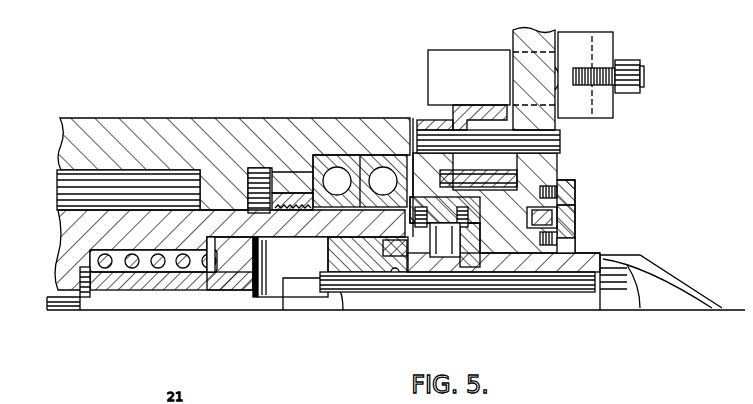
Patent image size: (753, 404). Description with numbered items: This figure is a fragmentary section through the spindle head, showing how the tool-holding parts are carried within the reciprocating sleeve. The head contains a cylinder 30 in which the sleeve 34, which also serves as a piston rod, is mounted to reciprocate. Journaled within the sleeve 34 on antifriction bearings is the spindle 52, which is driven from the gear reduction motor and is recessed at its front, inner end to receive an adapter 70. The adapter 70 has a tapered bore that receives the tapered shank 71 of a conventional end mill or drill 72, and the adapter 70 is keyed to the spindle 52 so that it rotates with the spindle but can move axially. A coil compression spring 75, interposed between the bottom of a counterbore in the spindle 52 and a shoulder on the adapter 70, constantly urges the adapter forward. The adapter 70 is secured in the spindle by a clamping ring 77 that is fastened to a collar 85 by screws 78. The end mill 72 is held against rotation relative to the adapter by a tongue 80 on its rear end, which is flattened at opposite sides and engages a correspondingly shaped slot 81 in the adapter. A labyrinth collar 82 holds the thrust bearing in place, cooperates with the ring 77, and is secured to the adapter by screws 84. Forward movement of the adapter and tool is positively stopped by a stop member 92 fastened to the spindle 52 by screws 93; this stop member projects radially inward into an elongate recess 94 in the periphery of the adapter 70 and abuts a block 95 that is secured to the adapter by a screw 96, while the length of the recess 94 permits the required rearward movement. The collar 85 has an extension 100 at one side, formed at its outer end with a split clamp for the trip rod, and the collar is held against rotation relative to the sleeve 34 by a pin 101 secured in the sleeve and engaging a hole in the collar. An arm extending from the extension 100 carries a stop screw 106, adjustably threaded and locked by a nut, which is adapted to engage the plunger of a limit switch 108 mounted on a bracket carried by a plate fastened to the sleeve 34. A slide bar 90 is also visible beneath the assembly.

The cylinder 30 is at (118, 178).
The sleeve 34 is at (255, 130).
The spindle 52 is at (60, 232).
The adapter 70 is at (228, 272).
The tapered shank 71 is at (562, 297).
The end mill or drill 72 is at (662, 272).
The coil compression spring 75 is at (135, 270).
The clamping ring 77 is at (575, 185).
The screws 78 is at (578, 197).
The tongue 80 is at (300, 298).
The slot 81 is at (276, 298).
The labyrinth collar 82 is at (577, 226).
The screws 84 is at (577, 242).
The collar 85 is at (556, 165).
The slide bar 90 is at (500, 237).
The stop member 92 is at (445, 250).
The screws 93 is at (418, 205).
The recess 94 is at (465, 250).
The block 95 is at (418, 277).
The screw 96 is at (388, 278).
The extension 100 is at (518, 45).
The pin 101 is at (560, 140).
The stop screw 106 is at (644, 74).
The limit switch 108 is at (456, 60).